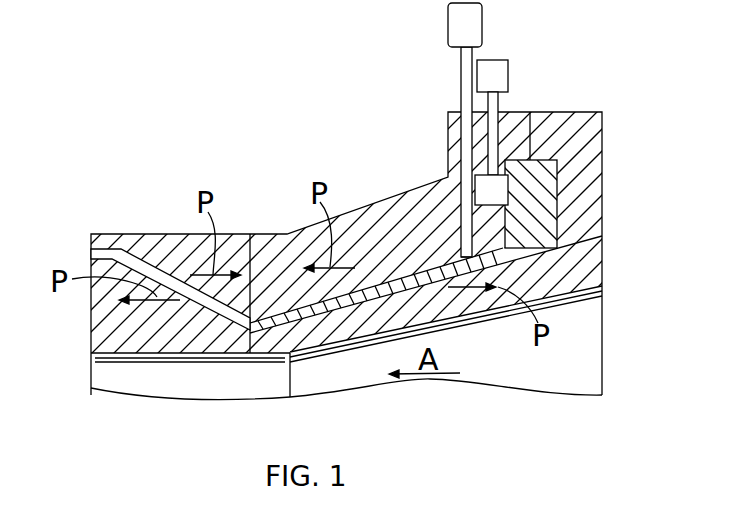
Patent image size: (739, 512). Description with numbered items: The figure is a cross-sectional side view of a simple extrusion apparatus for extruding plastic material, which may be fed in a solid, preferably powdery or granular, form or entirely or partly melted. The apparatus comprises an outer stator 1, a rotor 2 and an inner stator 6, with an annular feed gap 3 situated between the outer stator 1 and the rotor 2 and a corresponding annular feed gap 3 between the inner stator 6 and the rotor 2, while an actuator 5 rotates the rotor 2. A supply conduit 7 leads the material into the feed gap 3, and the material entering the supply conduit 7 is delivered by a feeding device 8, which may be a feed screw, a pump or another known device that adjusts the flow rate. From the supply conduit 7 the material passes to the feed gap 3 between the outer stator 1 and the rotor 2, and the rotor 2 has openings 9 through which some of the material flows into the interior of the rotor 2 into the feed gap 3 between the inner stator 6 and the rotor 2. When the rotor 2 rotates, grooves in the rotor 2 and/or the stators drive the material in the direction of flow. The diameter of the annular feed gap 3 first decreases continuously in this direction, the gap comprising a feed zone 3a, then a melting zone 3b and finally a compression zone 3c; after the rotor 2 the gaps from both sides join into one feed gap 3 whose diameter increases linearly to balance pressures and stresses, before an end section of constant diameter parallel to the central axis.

The outer stator 1 is at (312, 252).
The rotor 2 is at (413, 282).
The annular feed gap 3 is at (173, 278).
The feed zone 3a is at (437, 285).
The melting zone 3b is at (383, 302).
The compression zone 3c is at (310, 322).
The actuator 5 is at (500, 69).
The inner stator 6 is at (536, 312).
The supply conduit 7 is at (463, 103).
The feeding device 8 is at (460, 28).
The openings 9 is at (458, 254).